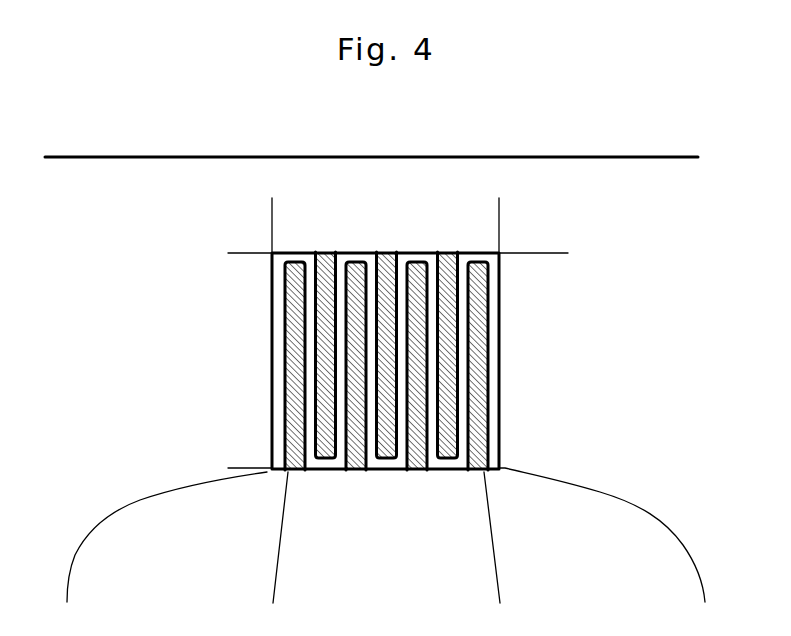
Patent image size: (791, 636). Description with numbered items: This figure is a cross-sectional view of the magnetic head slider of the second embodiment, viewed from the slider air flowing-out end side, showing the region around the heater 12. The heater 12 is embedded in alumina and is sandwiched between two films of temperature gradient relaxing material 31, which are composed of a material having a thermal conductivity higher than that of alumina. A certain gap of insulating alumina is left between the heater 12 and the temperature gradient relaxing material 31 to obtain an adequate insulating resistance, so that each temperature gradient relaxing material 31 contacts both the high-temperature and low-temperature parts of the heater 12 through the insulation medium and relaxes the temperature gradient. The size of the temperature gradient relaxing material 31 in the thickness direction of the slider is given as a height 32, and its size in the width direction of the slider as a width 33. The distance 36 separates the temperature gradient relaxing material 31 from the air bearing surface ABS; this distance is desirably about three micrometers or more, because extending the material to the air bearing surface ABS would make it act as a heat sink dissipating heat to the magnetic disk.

The heater 12 is at (490, 385).
The temperature gradient relaxing material 31 is at (485, 428).
The height 32 is at (240, 266).
The width 33 is at (486, 210).
The distance from ABS to heater 36 is at (548, 170).
The air bearing surface ABS is at (577, 156).